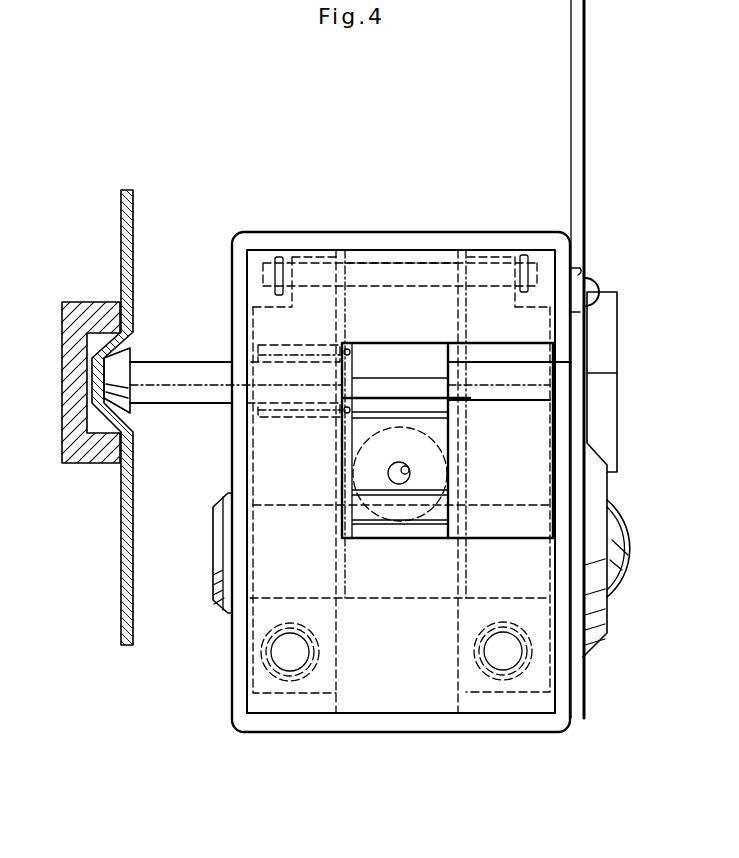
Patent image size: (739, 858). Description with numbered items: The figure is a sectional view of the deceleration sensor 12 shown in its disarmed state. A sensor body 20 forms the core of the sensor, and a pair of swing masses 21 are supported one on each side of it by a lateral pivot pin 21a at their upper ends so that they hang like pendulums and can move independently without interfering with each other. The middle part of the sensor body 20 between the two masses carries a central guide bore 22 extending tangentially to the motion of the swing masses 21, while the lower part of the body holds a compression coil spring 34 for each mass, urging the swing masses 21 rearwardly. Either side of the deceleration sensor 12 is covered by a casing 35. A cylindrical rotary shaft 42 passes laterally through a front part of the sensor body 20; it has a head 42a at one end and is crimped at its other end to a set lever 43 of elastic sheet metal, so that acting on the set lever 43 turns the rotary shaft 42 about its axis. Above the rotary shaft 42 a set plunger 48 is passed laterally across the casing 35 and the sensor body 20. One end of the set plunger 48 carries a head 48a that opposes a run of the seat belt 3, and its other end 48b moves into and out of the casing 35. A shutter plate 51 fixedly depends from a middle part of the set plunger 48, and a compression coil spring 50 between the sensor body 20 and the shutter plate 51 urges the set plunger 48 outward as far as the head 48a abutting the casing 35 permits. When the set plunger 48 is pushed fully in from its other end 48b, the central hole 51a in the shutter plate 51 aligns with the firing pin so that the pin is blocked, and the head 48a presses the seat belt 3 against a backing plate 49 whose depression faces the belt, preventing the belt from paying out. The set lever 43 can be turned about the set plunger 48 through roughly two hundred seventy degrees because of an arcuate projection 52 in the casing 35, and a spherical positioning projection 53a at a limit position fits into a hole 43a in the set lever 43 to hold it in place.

The seat belt 3 is at (121, 232).
The deceleration sensor 12 is at (258, 207).
The sensor body 20 is at (387, 260).
The swing masses 21 is at (248, 628).
The lateral pivot pin 21a is at (418, 265).
The central guide bore 22 is at (358, 460).
The compression coil spring 34 is at (292, 682).
The casing 35 is at (447, 232).
The rotary shaft 42 is at (411, 599).
The head 42a is at (213, 580).
The set lever 43 is at (606, 595).
The hole 43a is at (585, 279).
The set plunger 48 is at (220, 362).
The head 48a is at (130, 353).
The other end 48b is at (487, 368).
The backing plate 49 is at (62, 413).
The compression coil spring 50 is at (270, 416).
The shutter plate 51 is at (378, 542).
The central hole 51a is at (410, 472).
The arcuate projection 52 is at (618, 358).
The spherical positioning projection 53a is at (598, 291).